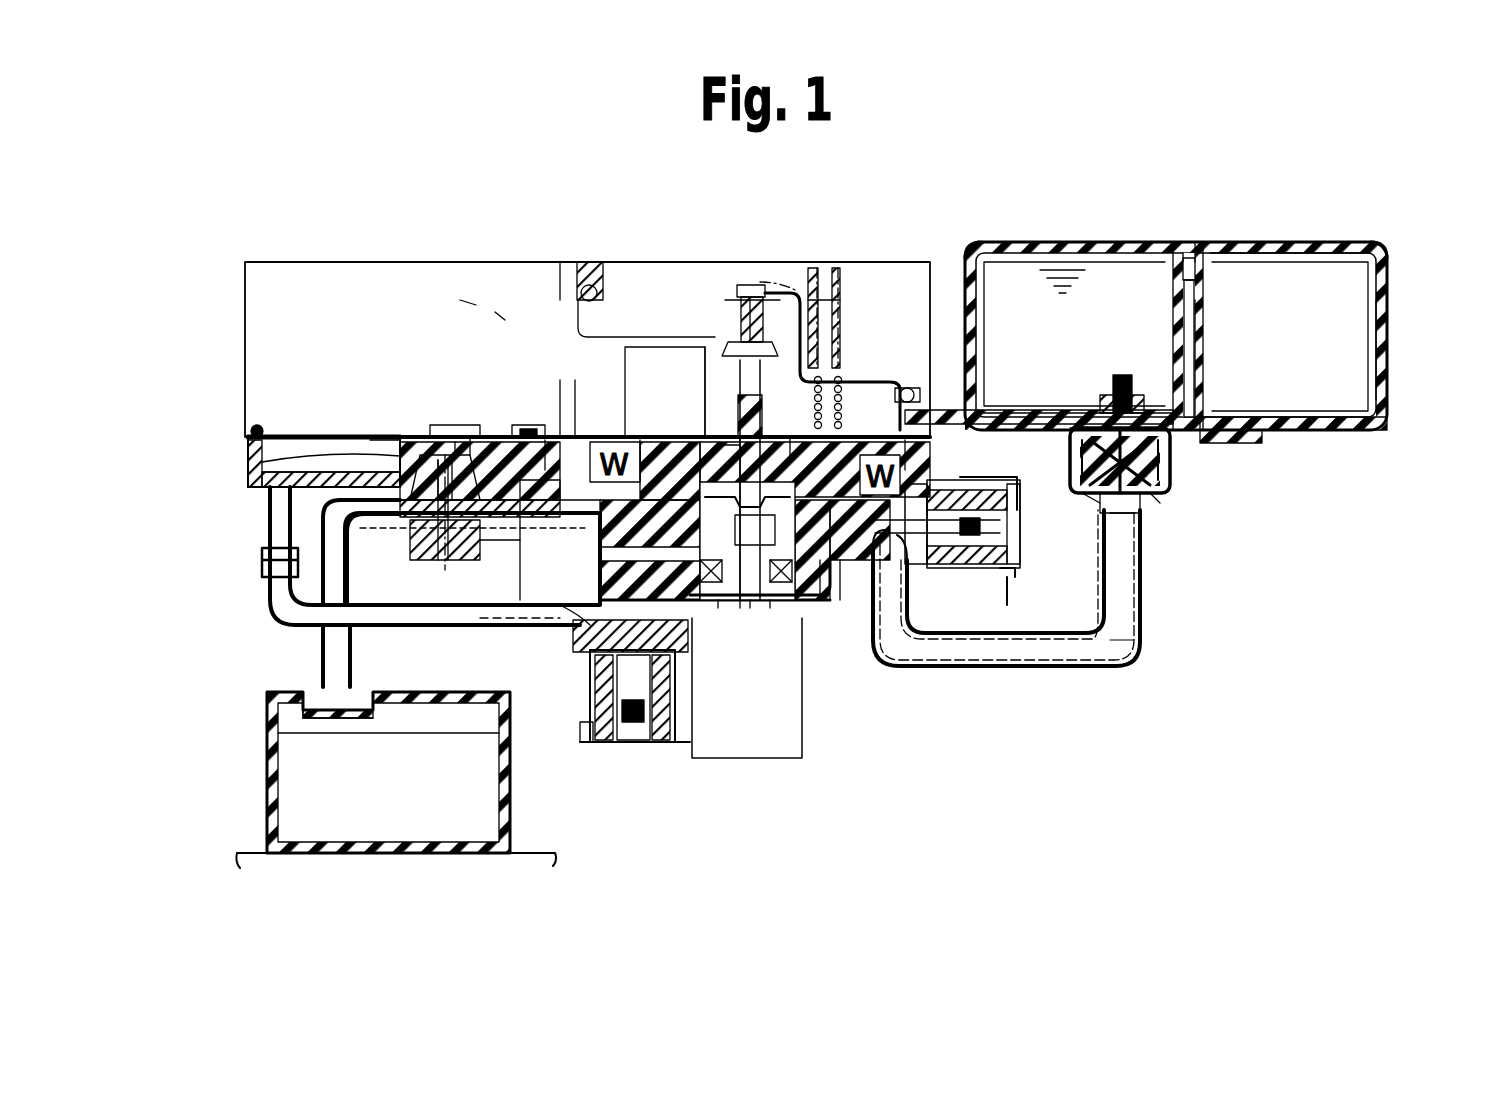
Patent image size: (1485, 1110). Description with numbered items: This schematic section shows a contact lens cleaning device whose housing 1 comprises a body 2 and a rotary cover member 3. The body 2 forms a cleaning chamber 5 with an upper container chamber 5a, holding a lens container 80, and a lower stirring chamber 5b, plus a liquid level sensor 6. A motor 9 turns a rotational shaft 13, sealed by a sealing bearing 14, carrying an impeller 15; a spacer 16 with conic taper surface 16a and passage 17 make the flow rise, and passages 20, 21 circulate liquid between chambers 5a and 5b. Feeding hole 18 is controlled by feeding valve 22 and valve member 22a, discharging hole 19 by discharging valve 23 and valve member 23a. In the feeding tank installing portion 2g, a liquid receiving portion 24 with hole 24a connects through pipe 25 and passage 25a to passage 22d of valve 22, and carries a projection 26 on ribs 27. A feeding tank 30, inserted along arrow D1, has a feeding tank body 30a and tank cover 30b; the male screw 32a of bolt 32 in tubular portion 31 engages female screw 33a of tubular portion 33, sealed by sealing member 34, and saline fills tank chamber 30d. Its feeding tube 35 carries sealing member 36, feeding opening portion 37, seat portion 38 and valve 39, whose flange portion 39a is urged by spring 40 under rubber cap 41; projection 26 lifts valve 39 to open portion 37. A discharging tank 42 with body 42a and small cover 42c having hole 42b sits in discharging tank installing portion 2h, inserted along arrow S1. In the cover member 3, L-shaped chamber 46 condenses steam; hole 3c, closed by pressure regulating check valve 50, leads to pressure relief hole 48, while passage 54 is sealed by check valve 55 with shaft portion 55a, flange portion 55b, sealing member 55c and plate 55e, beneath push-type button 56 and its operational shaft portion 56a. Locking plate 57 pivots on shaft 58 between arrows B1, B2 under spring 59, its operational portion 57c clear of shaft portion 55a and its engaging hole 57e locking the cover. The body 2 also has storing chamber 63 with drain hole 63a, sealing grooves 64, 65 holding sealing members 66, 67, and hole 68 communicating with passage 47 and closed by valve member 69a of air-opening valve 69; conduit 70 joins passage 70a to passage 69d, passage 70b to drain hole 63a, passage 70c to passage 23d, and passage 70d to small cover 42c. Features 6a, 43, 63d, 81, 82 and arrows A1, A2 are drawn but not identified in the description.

The plate 1 is at (248, 440).
The base 2 is at (260, 490).
The bottom wall 2g is at (1280, 432).
The floor 2h is at (250, 855).
The enclosure 3 is at (289, 275).
The pipe 3c is at (590, 322).
The housing 5 is at (600, 437).
The housing part 5a is at (650, 440).
The housing block 5b is at (680, 437).
The member 6 is at (565, 440).
The member part 6a is at (545, 440).
The control box 9 is at (802, 748).
The valve element 13 is at (748, 600).
The valve seat 14 is at (770, 600).
The wall 15 is at (957, 474).
The passage 16 is at (520, 575).
The passage wall 16a is at (585, 540).
The rod 17 is at (740, 600).
The spring 18 is at (845, 600).
The seal 19 is at (720, 600).
The chamber 20 is at (575, 565).
The window 21 is at (912, 475).
The pipe 22 is at (990, 560).
The cylinder 22a is at (960, 580).
The pipe bottom 22d is at (912, 662).
The solenoid 23 is at (603, 715).
The flange 23a is at (578, 731).
The connection 23d is at (562, 627).
The nozzle 24 is at (1150, 487).
The nozzle outlet 24a is at (1106, 522).
The pipe 25 is at (1135, 662).
The pipe wall 25a is at (1138, 640).
The seal 26 is at (1140, 500).
The fitting 27 is at (1136, 525).
The tank 30 is at (1387, 407).
The tank wall 30a is at (1387, 378).
The tank top 30b is at (1298, 252).
The liquid 30d is at (1082, 264).
The partition 31 is at (1203, 365).
The tube 32 is at (1200, 332).
The tube cap 32a is at (1203, 290).
The divider 33 is at (1172, 255).
The divider top 33a is at (1186, 255).
The corner 34 is at (975, 250).
The valve body 35 is at (1085, 442).
The valve lower 36 is at (1095, 472).
The valve side 37 is at (1160, 462).
The valve seat 38 is at (1108, 415).
The plug 39 is at (1123, 372).
The valve housing 39a is at (1110, 440).
The spring 40 is at (1140, 400).
The guide 41 is at (1115, 380).
The tank 42 is at (265, 760).
The liquid level 42a is at (268, 720).
The notch 42b is at (360, 714).
The notch wall 42c is at (310, 714).
The bolt 43 is at (258, 425).
The port 46 is at (800, 440).
The bolt 47 is at (470, 440).
The bracket 48 is at (588, 288).
The support 50 is at (578, 280).
The valve stem 54 is at (760, 335).
The valve 55 is at (735, 295).
The valve flange 55a is at (740, 308).
The valve rod 55b is at (750, 410).
The valve cone 55c is at (735, 345).
The valve cap 55e is at (745, 288).
The pillar 56 is at (835, 300).
The pillar base 56a is at (840, 330).
The tube 57 is at (865, 385).
The tube axis 57c is at (790, 285).
The tube end 57e is at (970, 385).
The fitting 58 is at (910, 385).
The spring 59 is at (836, 380).
The plate 63 is at (322, 437).
The plate bracket 63a is at (265, 558).
The plate edge 63d is at (372, 437).
The valve 64 is at (470, 450).
The cap 65 is at (530, 428).
The seat 66 is at (455, 437).
The stem 67 is at (480, 470).
The cover 68 is at (445, 430).
The valve 69 is at (445, 560).
The chamber 69a is at (398, 535).
The plate bottom 69d is at (262, 472).
The pipe 70 is at (300, 627).
The pipe top 70a is at (372, 607).
The pipe branch 70b is at (290, 590).
The pipe bottom 70c is at (470, 627).
The pipe outlet 70d is at (335, 663).
The passage 80 is at (720, 437).
The passage 81 is at (500, 615).
The port 82 is at (735, 445).
The direction A1 is at (472, 305).
The direction A2 is at (500, 320).
The axis B1 is at (822, 262).
The axis B2 is at (838, 265).
The direction D1 is at (1245, 235).
The sensor S1 is at (250, 783).